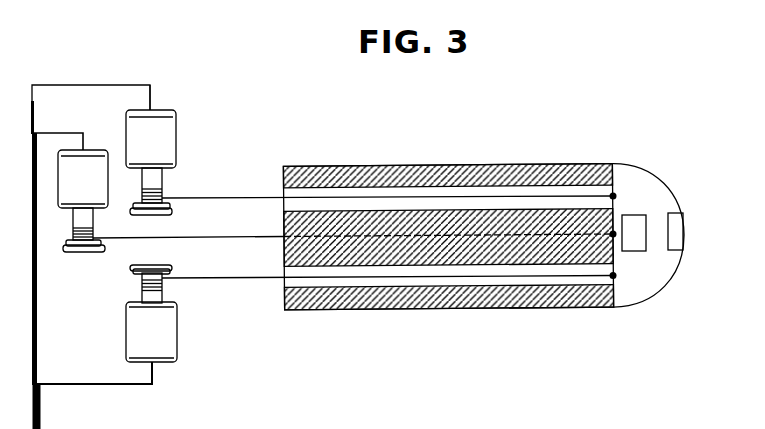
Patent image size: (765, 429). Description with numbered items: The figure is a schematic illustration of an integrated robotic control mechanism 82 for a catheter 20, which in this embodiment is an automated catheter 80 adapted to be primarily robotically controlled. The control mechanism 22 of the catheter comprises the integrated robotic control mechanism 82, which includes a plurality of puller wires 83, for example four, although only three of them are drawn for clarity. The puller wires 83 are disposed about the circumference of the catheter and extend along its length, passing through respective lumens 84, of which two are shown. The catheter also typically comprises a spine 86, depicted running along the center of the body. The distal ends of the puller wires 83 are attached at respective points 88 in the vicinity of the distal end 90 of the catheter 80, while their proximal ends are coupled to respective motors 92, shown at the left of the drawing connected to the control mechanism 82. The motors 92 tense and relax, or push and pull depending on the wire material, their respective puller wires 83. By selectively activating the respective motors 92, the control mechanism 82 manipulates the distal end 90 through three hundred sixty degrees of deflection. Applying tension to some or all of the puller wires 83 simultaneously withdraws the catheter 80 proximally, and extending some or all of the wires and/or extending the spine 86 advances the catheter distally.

The catheter 20 is at (318, 110).
The control mechanism 22 is at (193, 63).
The automated catheter 80 is at (252, 357).
The integrated robotic control mechanism 82 is at (66, 60).
The puller wires 83 is at (256, 198).
The lumens 84 is at (394, 192).
The spine 86 is at (283, 227).
The attachment points 88 is at (613, 194).
The distal end 90 is at (684, 232).
The motors 92 is at (97, 148).